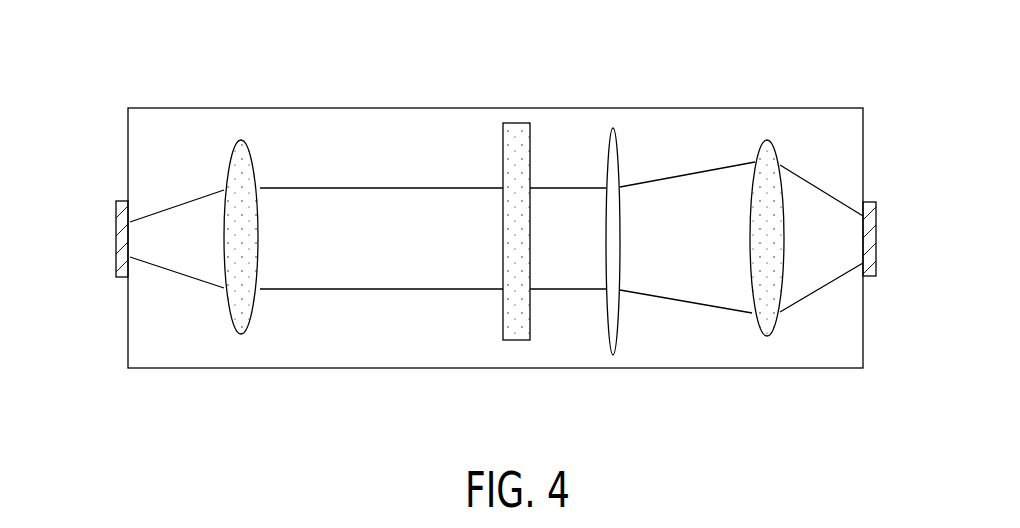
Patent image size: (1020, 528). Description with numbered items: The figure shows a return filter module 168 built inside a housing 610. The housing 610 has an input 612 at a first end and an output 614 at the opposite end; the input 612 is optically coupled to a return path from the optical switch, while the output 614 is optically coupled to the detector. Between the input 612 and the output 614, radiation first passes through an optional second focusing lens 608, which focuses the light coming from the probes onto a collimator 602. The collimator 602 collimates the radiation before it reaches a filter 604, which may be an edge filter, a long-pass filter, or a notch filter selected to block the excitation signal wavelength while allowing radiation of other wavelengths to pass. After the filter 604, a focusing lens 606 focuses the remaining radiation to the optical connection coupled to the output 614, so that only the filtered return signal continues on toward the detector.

The return filter module 168 is at (795, 66).
The collimator 602 is at (616, 320).
The filter 604 is at (530, 320).
The focusing lens 606 is at (251, 316).
The second focusing lens 608 is at (777, 322).
The housing 610 is at (793, 371).
The housing input 612 is at (877, 263).
The housing output 614 is at (116, 263).